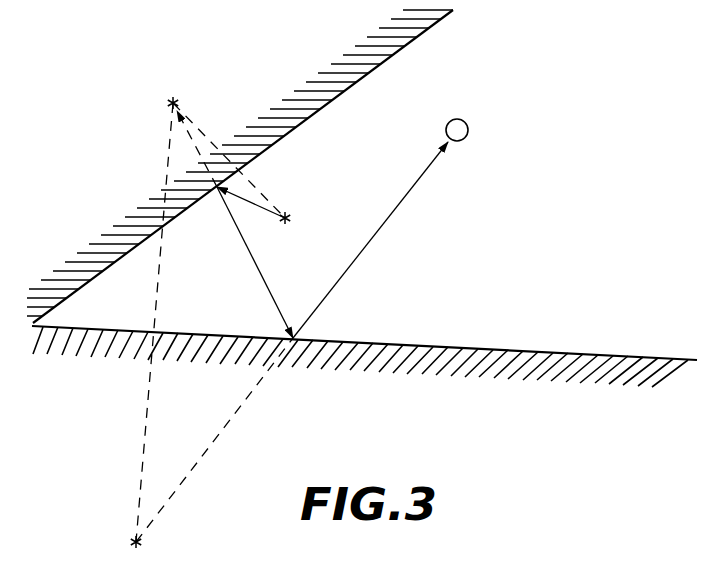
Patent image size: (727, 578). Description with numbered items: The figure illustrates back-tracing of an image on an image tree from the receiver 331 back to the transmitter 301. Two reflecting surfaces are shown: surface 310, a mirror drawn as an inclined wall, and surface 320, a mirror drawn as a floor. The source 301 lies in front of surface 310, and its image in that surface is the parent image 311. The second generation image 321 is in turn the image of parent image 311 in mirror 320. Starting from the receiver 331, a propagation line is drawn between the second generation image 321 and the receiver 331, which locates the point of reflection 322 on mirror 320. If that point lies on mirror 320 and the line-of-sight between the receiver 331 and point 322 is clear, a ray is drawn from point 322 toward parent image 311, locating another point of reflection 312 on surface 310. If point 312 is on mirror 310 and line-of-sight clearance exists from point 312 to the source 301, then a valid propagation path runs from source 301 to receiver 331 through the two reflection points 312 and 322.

The transmitter 301 is at (290, 214).
The surface 310 is at (385, 72).
The parent image 311 is at (168, 100).
The point of reflection 312 is at (216, 193).
The surface 320 is at (591, 346).
The second generation image 321 is at (129, 542).
The point of reflection 322 is at (305, 335).
The receiver 331 is at (458, 142).